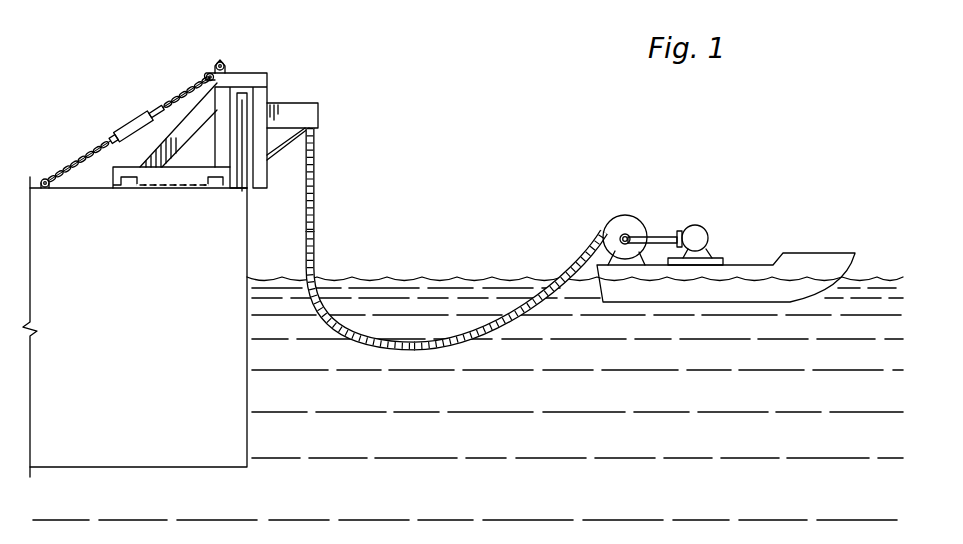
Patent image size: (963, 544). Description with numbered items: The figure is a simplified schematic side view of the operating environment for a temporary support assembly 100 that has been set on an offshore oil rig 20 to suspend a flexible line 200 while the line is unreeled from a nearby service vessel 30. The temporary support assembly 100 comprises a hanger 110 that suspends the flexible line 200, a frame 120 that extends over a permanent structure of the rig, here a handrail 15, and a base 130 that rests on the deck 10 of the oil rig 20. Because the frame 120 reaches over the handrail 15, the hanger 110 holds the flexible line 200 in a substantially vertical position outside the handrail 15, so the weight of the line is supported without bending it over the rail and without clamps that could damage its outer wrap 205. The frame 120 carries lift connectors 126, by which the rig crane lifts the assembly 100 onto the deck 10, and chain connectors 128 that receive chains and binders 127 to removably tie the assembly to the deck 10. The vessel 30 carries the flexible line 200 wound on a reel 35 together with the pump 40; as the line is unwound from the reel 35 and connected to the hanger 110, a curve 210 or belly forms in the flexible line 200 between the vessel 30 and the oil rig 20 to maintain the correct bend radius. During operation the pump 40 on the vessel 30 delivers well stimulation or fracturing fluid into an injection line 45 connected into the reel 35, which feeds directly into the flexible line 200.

The deck 10 is at (70, 186).
The handrail 15 is at (241, 92).
The offshore oil rig 20 is at (263, 435).
The vessel 30 is at (822, 253).
The reel 35 is at (624, 215).
The pump 40 is at (695, 225).
The injection line 45 is at (667, 236).
The temporary support assembly 100 is at (292, 80).
The hanger 110 is at (318, 117).
The frame 120 is at (222, 130).
The lift connectors 126 is at (219, 61).
The chains and binders 127 is at (127, 126).
The chain connectors 128 is at (205, 78).
The base 130 is at (120, 160).
The flexible line 200 is at (314, 197).
The outer wrap 205 is at (314, 233).
The curve 210 is at (423, 350).